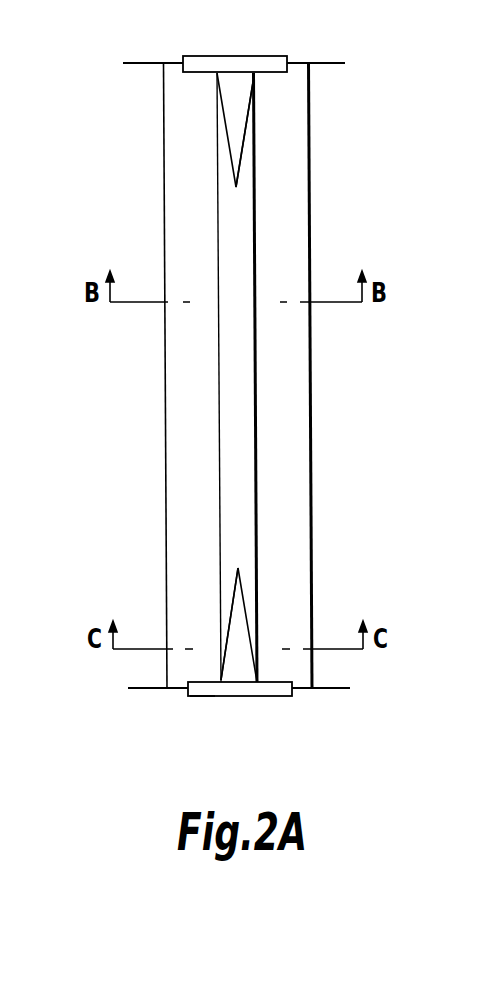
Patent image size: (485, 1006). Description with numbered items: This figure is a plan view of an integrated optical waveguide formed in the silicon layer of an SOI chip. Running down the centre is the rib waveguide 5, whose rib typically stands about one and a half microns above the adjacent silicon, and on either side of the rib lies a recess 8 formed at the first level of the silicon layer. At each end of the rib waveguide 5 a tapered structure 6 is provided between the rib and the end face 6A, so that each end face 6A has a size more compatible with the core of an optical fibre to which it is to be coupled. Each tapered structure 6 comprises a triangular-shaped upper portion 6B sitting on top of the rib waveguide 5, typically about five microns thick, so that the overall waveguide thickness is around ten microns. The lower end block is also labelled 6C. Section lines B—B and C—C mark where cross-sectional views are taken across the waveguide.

The rib waveguide 5 is at (235, 435).
The tapered structure 6 is at (223, 130).
The end face 6A is at (235, 55).
The triangular-shaped upper portion 6B is at (237, 108).
The end block underside 6C is at (202, 696).
The recess 8 is at (188, 226).